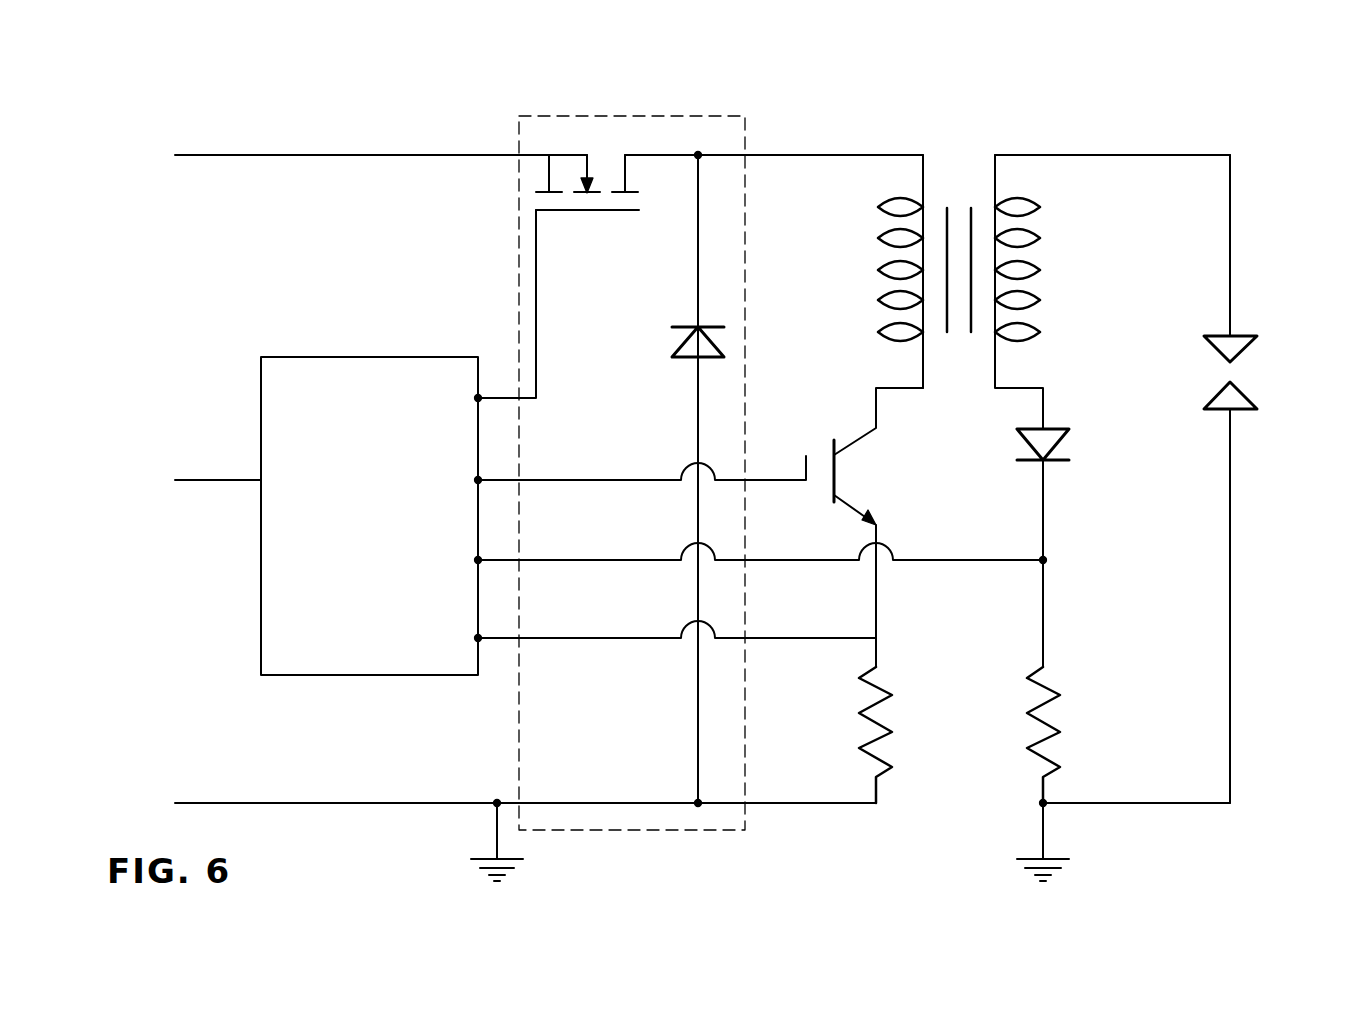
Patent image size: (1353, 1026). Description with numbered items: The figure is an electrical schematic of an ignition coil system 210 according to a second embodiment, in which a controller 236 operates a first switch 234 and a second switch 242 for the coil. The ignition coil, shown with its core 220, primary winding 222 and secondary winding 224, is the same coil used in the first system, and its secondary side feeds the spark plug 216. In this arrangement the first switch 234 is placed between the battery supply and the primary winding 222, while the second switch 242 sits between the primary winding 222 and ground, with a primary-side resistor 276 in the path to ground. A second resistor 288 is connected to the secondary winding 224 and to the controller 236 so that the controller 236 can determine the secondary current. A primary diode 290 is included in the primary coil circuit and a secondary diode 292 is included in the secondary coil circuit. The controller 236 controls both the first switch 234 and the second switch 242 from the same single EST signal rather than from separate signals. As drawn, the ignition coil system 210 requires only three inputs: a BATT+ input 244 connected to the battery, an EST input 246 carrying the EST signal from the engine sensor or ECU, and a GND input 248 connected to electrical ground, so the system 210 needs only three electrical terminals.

The ignition coil system 210 is at (1216, 115).
The spark plug 216 is at (1243, 378).
The ignition coil / transformer core 220 is at (957, 208).
The primary winding 222 is at (882, 263).
The secondary winding 224 is at (1033, 265).
The first switch 234 is at (543, 190).
The controller 236 is at (333, 363).
The second switch 242 is at (822, 438).
The BATT+ input 244 is at (202, 155).
The EST input 246 is at (202, 480).
The GND input 248 is at (202, 803).
The primary current sense resistor Rp 276 is at (893, 690).
The second resistor 288 is at (1060, 690).
The primary diode 290 is at (683, 327).
The secondary diode 292 is at (1068, 440).